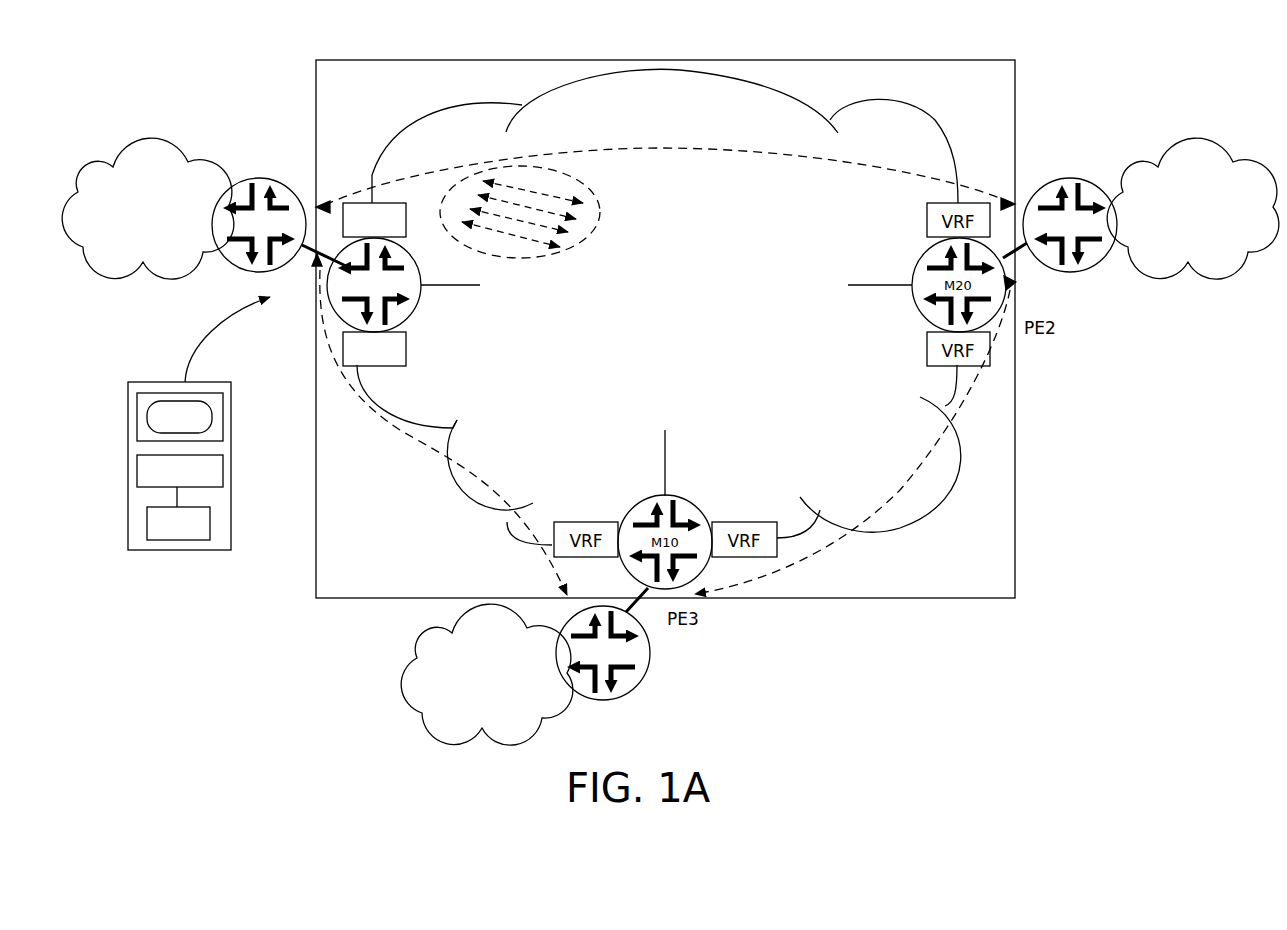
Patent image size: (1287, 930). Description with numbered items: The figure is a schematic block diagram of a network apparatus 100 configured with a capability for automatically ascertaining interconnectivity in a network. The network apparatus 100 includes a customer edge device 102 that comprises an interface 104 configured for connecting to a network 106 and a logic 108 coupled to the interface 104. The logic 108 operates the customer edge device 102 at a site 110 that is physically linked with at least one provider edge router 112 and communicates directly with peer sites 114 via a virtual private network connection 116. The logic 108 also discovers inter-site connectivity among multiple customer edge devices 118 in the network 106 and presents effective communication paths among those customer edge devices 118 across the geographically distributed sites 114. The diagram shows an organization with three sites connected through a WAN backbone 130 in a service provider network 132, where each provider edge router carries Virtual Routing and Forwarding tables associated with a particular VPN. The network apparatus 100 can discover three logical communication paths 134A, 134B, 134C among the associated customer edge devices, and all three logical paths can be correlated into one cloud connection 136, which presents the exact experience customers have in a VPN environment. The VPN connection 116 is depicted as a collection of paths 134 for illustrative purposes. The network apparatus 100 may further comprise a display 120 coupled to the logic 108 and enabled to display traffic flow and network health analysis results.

The network apparatus 100 is at (179, 423).
The customer edge device 102 is at (257, 273).
The interface 104 is at (210, 523).
The network 106 is at (1082, 66).
The logic 108 is at (224, 470).
The site 110 is at (152, 271).
The provider edge router 112 is at (416, 306).
The peer sites 114 is at (1186, 276).
The virtual private network connection 116 is at (548, 212).
The customer edge devices 118 is at (1082, 272).
The display 120 is at (224, 420).
The WAN backbone 130 is at (918, 512).
The service provider network 132 is at (765, 60).
The paths 134 is at (490, 222).
The logical communication path 134A is at (670, 149).
The logical communication path 134B is at (512, 497).
The logical communication path 134C is at (933, 448).
The cloud connection 136 is at (826, 118).